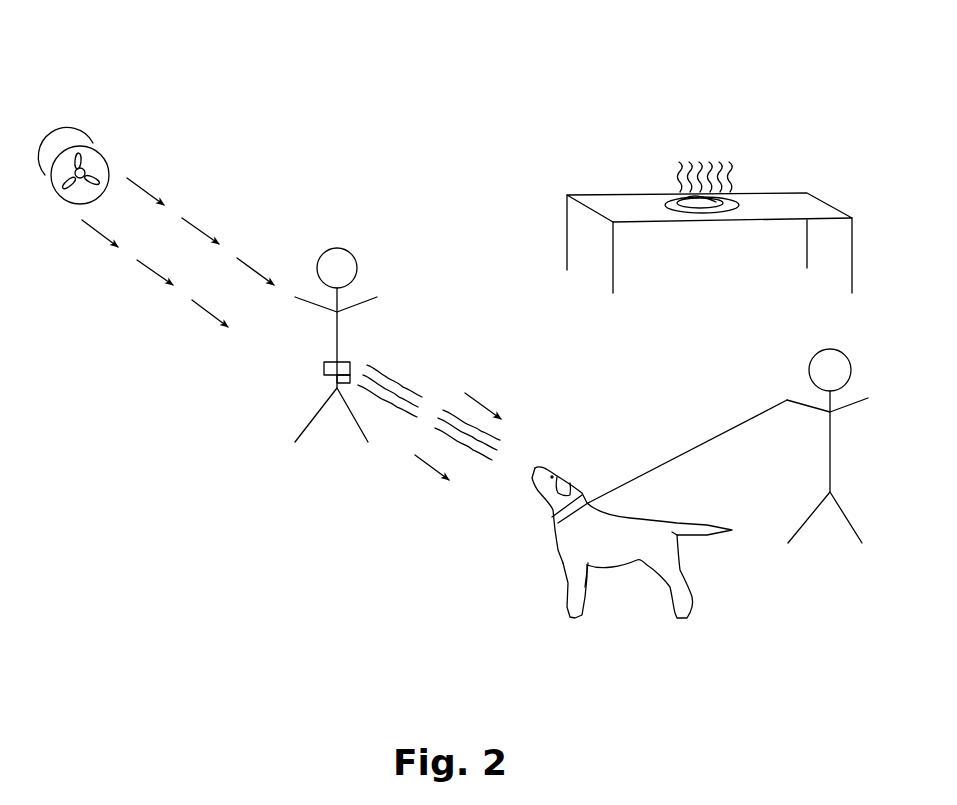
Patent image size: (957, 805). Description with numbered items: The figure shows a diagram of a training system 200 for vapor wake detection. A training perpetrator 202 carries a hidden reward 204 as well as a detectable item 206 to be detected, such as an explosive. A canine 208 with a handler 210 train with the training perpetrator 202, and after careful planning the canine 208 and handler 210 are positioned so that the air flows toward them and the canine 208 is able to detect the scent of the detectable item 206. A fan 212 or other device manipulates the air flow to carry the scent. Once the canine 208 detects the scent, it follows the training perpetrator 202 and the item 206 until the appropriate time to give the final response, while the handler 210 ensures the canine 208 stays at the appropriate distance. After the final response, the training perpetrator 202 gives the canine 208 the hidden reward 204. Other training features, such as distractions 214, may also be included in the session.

The training system 200 is at (700, 30).
The training perpetrator 202 is at (325, 250).
The hidden reward 204 is at (324, 369).
The detectable item 206 is at (343, 360).
The canine 208 is at (633, 627).
The handler 210 is at (810, 360).
The fan 212 is at (98, 148).
The distractions 214 is at (741, 183).